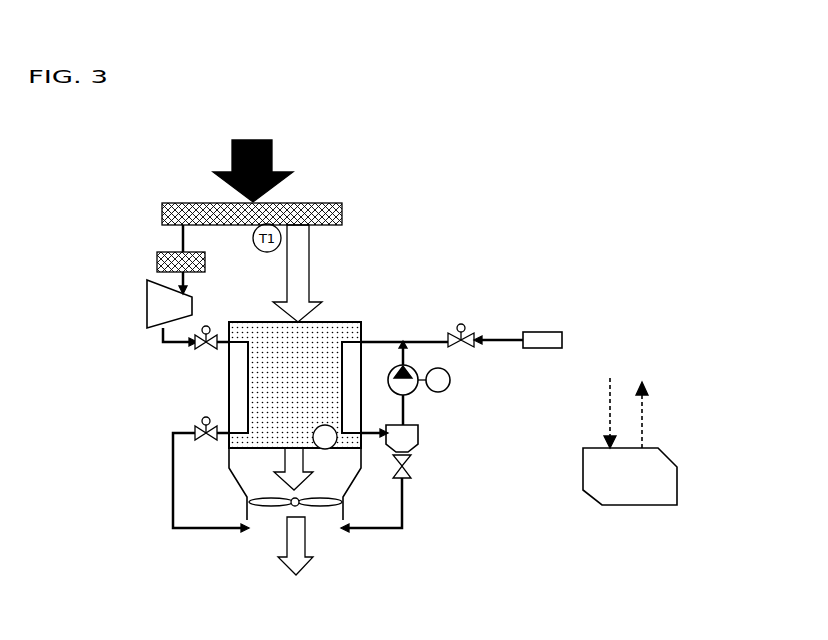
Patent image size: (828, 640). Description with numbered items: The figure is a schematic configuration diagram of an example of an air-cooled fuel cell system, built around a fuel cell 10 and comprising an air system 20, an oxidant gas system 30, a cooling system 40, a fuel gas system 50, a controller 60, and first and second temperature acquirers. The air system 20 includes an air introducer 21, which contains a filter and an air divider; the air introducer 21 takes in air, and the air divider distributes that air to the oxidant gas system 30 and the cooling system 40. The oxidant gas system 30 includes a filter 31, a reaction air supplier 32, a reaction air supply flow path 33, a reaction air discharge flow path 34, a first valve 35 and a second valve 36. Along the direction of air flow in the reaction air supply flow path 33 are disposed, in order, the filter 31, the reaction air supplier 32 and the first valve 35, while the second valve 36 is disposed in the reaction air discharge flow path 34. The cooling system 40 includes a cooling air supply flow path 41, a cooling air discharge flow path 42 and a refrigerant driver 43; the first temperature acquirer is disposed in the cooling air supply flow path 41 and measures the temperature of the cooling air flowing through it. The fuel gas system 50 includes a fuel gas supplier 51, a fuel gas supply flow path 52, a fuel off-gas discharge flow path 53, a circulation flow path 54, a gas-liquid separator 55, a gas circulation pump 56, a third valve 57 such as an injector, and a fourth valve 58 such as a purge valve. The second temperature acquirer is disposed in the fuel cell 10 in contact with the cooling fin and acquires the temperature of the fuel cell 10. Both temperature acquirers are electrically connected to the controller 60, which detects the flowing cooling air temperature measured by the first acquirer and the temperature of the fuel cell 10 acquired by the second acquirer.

The fuel cell 10 is at (342, 322).
The air system 20 is at (257, 157).
The air introducer 21 is at (308, 203).
The oxidant gas system 30 is at (155, 238).
The filter 31 is at (157, 263).
The reaction air supplier 32 is at (147, 303).
The reaction air supply flow path 33 is at (163, 340).
The reaction air discharge flow path 34 is at (173, 470).
The first valve 35 is at (200, 338).
The second valve 36 is at (203, 420).
The cooling system 40 is at (353, 237).
The cooling air supply flow path 41 is at (309, 291).
The cooling air discharge flow path 42 is at (287, 535).
The refrigerant driver 43 is at (277, 508).
The fuel gas system 50 is at (505, 327).
The fuel gas supplier 51 is at (558, 331).
The fuel gas supply flow path 52 is at (377, 340).
The fuel off-gas discharge flow path 53 is at (405, 515).
The circulation flow path 54 is at (407, 415).
The gas-liquid separator 55 is at (418, 434).
The gas circulation pump 56 is at (450, 382).
The third valve 57 is at (462, 325).
The fourth valve 58 is at (407, 470).
The controller 60 is at (670, 458).